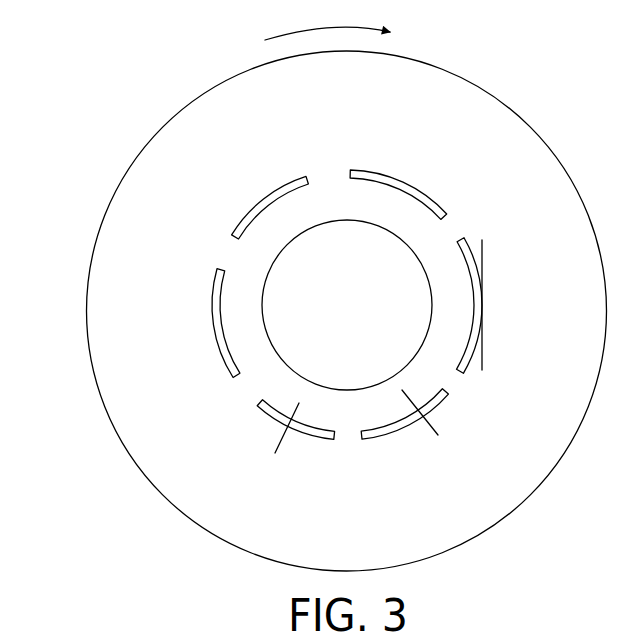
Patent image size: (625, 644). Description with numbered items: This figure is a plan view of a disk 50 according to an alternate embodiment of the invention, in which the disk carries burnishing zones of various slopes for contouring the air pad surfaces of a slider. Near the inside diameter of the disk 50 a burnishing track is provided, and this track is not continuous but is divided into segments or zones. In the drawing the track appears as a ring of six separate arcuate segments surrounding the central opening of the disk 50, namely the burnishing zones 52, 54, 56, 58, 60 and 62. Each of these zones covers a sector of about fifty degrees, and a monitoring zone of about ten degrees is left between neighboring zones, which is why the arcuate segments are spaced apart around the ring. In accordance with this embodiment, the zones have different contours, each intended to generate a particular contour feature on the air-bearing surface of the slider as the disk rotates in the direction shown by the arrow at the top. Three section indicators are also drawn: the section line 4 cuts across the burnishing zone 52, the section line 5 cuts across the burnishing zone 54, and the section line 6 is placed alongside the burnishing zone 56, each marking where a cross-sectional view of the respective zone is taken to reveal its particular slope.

The disk 50 is at (92, 178).
The burnishing zone 52 is at (302, 438).
The burnishing zone 54 is at (440, 407).
The burnishing zone 56 is at (478, 310).
The burnishing zone 58 is at (402, 188).
The burnishing zone 60 is at (256, 215).
The burnishing zone 62 is at (210, 322).
The section line 4- 4 is at (290, 399).
The section line 5- 5 is at (394, 396).
The section line 6- 6 is at (490, 240).